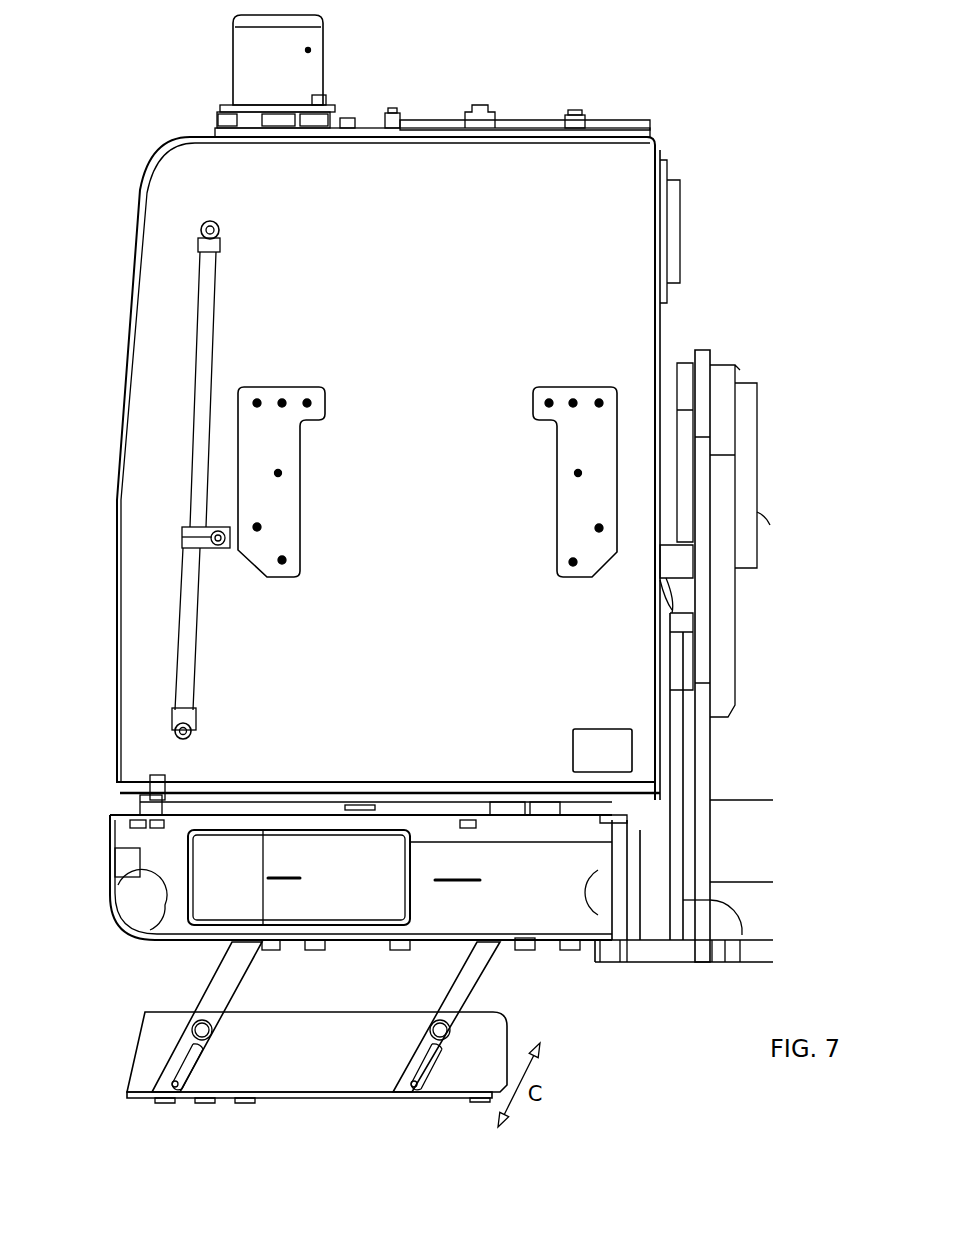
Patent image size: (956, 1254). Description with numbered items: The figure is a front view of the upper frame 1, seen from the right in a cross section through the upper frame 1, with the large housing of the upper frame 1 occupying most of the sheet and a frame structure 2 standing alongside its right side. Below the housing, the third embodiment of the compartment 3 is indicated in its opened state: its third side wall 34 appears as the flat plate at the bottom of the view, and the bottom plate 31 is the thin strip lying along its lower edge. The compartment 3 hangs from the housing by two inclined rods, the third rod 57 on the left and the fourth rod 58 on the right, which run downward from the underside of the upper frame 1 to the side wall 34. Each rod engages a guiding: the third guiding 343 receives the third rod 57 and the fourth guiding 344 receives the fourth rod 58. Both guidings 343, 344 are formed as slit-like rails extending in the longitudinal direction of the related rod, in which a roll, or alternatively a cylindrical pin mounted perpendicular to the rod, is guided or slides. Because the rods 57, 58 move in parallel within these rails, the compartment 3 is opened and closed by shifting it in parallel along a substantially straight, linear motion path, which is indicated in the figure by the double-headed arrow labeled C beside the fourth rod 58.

The upper frame 1 is at (104, 155).
The vehicle frame 2 is at (638, 1010).
The compartment 3 is at (294, 1040).
The bottom plate 31 is at (356, 1099).
The third side wall 34 is at (292, 1058).
The third rod 57 is at (222, 975).
The fourth rod 58 is at (480, 983).
The third guiding 343 is at (175, 1063).
The fourth guiding 344 is at (423, 1060).